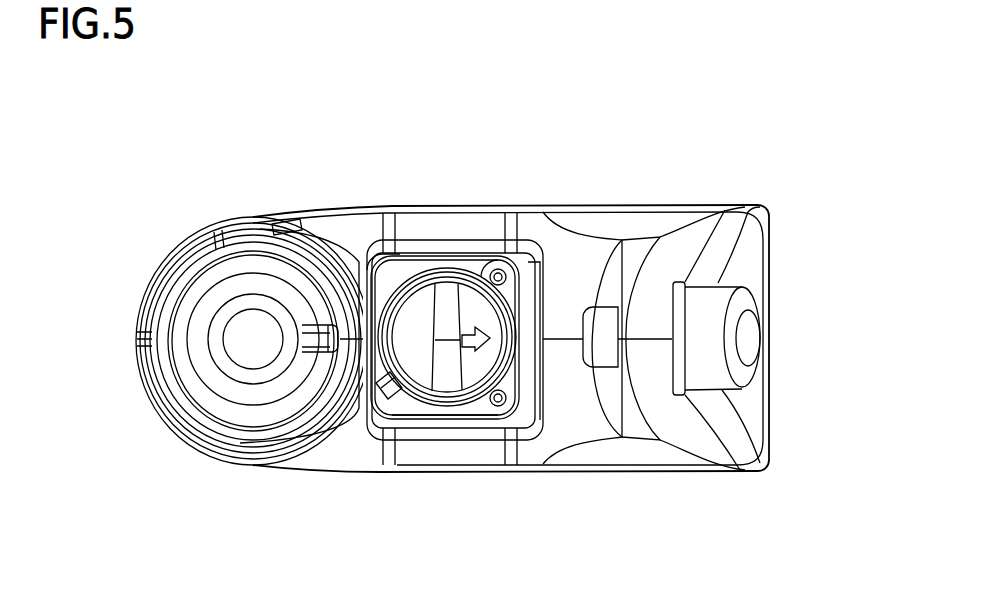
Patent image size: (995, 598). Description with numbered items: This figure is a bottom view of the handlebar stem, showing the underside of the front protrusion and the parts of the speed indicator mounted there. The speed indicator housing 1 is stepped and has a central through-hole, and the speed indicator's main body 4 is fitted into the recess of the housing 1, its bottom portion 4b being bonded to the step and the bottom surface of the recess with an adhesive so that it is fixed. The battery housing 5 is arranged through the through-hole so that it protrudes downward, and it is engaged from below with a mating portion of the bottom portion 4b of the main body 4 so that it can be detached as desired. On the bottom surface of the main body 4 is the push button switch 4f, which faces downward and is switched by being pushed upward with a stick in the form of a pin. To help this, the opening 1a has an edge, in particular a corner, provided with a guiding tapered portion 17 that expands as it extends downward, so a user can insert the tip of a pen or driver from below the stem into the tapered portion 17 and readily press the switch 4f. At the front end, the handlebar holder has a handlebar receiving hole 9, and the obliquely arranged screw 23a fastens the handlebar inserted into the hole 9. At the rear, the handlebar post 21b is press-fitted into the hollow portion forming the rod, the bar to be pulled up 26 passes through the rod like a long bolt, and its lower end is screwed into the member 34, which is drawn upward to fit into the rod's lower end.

The speed indicator housing 1 is at (463, 421).
The opening 1a is at (420, 417).
The main body 4 is at (255, 88).
The bottom portion 4b is at (370, 248).
The push button switch 4f is at (528, 262).
The battery housing 5 is at (420, 278).
The handlebar receiving hole 9 is at (637, 224).
The guiding tapered portion 17 is at (542, 265).
The handlebar post 21b is at (223, 243).
The screw 23a is at (708, 323).
The bar to be pulled up 26 is at (235, 312).
The member 34 is at (210, 398).